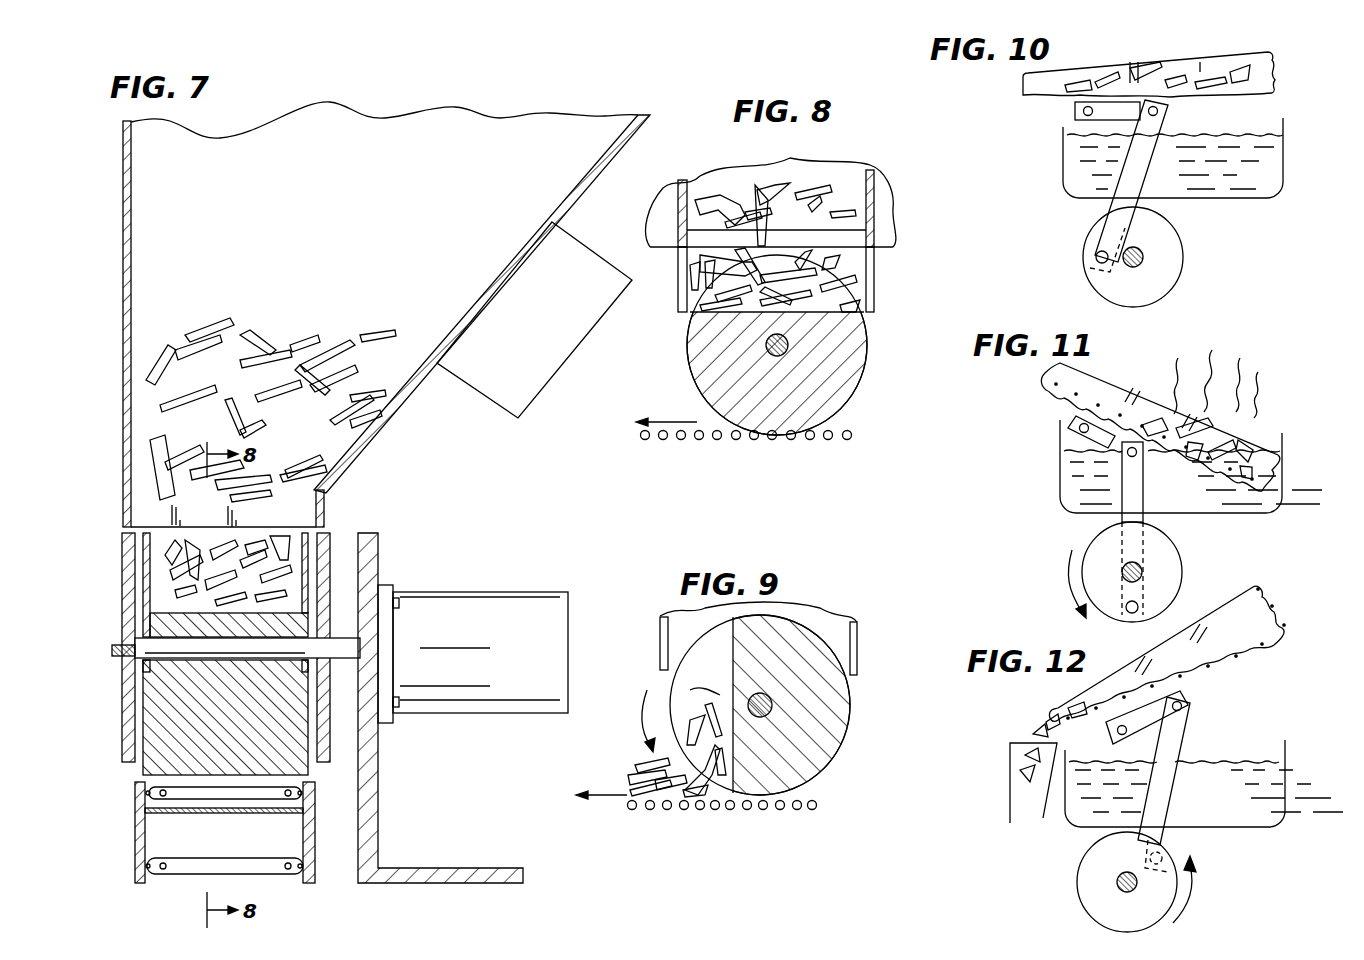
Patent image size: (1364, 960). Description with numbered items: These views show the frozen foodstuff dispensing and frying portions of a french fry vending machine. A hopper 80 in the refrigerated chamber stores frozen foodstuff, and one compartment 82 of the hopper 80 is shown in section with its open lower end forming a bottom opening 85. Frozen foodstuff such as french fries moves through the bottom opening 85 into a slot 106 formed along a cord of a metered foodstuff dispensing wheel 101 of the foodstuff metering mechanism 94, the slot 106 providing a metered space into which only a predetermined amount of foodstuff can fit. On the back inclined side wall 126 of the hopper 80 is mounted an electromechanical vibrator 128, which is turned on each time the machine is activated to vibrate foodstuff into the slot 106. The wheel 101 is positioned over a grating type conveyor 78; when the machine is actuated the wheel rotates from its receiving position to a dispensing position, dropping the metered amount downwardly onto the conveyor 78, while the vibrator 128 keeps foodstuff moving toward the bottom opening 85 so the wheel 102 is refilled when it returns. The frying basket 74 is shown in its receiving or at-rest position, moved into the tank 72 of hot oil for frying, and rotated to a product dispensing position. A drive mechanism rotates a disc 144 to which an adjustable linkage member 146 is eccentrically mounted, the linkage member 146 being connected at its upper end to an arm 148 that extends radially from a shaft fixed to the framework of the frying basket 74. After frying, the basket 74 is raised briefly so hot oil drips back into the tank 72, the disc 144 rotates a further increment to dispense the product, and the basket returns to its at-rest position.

In FIG. 10, the tank 72 is at (1284, 160).
In FIG. 11, the tank 72 is at (1283, 476).
In FIG. 12, the tank 72 is at (1285, 790).
In FIG. 10, the frying basket 74 is at (1275, 76).
In FIG. 11, the frying basket 74 is at (1102, 368).
In FIG. 12, the frying basket 74 is at (1275, 608).
In FIG. 7, the grating type conveyor 78 is at (182, 882).
In FIG. 8, the grating type conveyor 78 is at (680, 440).
In FIG. 9, the grating type conveyor 78 is at (652, 810).
In FIG. 7, the hopper 80 is at (118, 180).
In FIG. 7, the compartment 82 is at (175, 248).
In FIG. 7, the bottom opening 85 is at (148, 540).
In FIG. 8, the bottom opening 85 is at (874, 254).
In FIG. 9, the bottom opening 85 is at (758, 646).
In FIG. 7, the foodstuff metering mechanism 94 is at (108, 675).
In FIG. 7, the metered foodstuff dispensing wheel 101 is at (150, 633).
In FIG. 9, the metered foodstuff dispensing wheel 101 is at (852, 708).
In FIG. 8, the metered foodstuff dispensing wheel 102 is at (866, 340).
In FIG. 7, the slot 106 is at (325, 514).
In FIG. 8, the slot 106 is at (874, 294).
In FIG. 9, the slot 106 is at (697, 693).
In FIG. 7, the back inclined side wall 126 is at (404, 405).
In FIG. 7, the electromechanical vibrator 128 is at (555, 386).
In FIG. 10, the disc 144 is at (1182, 272).
In FIG. 11, the disc 144 is at (1182, 562).
In FIG. 12, the disc 144 is at (1080, 888).
In FIG. 10, the adjustable linkage member 146 is at (1150, 172).
In FIG. 11, the adjustable linkage member 146 is at (1122, 522).
In FIG. 12, the adjustable linkage member 146 is at (1176, 744).
In FIG. 10, the arm 148 is at (1076, 112).
In FIG. 11, the arm 148 is at (1065, 432).
In FIG. 12, the arm 148 is at (1185, 722).